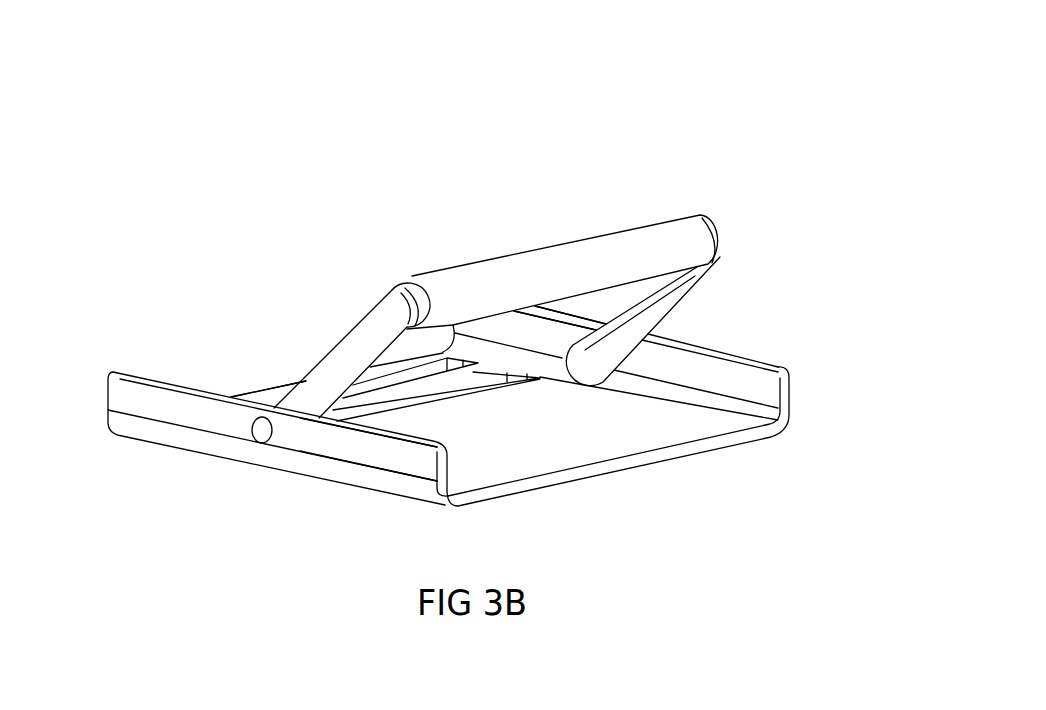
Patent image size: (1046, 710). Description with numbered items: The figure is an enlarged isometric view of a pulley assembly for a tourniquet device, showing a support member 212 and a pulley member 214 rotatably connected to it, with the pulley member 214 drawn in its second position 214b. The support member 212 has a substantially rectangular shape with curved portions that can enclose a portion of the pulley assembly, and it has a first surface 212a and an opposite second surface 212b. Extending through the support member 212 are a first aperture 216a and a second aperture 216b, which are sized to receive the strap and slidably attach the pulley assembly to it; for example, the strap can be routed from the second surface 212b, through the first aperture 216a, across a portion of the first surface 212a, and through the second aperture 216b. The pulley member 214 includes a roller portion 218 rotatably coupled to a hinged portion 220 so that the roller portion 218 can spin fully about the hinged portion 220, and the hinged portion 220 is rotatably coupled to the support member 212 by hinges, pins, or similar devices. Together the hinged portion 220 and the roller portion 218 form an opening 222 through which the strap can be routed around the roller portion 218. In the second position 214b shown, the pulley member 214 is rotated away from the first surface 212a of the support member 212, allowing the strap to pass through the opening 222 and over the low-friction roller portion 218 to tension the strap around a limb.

The support member 212 is at (418, 433).
The first surface 212a is at (177, 344).
The second surface 212b is at (323, 497).
The pulley member 214 is at (531, 218).
The second position 214b is at (717, 289).
The first aperture 216a is at (391, 278).
The second aperture 216b is at (354, 294).
The roller portion 218 is at (573, 232).
The hinged portion 220 is at (312, 340).
The opening 222 is at (655, 416).